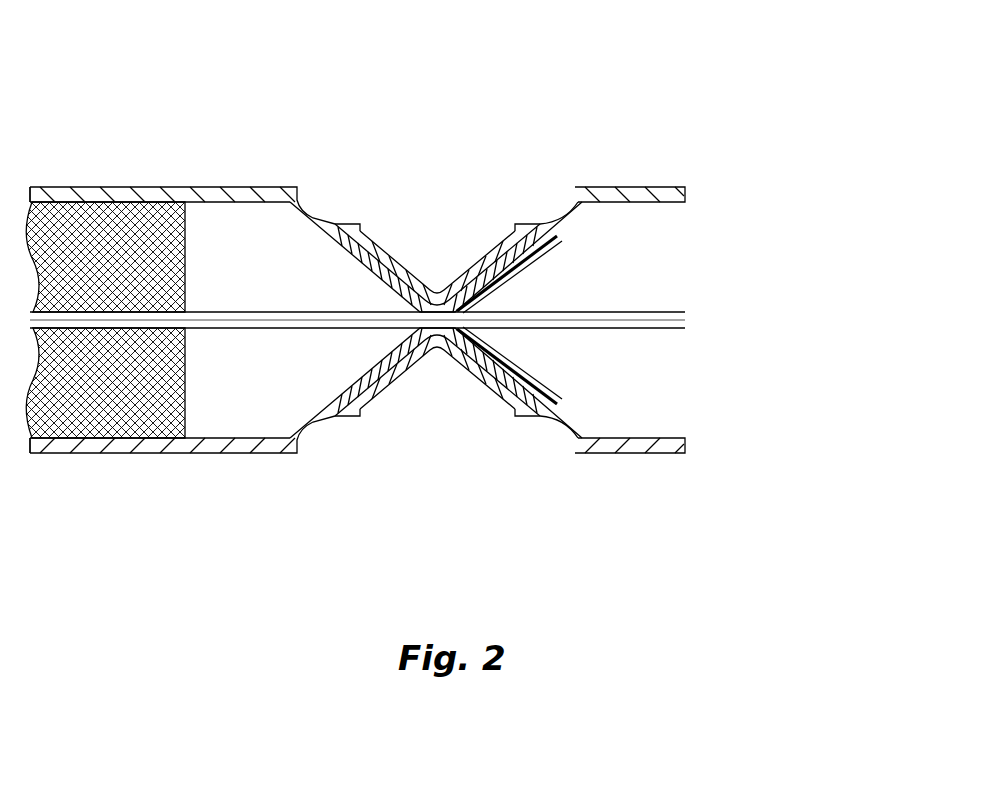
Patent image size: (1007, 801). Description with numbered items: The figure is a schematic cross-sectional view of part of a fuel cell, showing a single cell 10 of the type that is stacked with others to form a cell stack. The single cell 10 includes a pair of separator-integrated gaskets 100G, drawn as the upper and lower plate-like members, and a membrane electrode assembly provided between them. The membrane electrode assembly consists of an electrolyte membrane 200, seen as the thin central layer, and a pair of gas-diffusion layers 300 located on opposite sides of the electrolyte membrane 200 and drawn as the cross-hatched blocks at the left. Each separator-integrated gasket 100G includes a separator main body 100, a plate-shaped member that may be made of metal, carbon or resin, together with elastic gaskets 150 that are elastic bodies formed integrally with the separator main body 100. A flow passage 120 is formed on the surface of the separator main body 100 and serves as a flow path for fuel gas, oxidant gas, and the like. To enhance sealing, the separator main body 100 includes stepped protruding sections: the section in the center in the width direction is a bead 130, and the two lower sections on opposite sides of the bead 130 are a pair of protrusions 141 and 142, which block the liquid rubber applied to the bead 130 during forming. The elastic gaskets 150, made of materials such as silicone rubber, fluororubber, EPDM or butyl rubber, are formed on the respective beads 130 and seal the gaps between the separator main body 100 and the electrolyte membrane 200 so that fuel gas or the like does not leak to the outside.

The single cell 10 is at (673, 117).
The separator main body 100 is at (252, 184).
The separator-integrated gasket 100G is at (670, 228).
The flow passage 120 is at (62, 200).
The bead 130 is at (405, 278).
The protrusion 141 is at (330, 222).
The protrusion 142 is at (575, 196).
The elastic gasket 150 is at (513, 278).
The electrolyte membrane 200 is at (678, 322).
The gas-diffusion layer 300 is at (160, 200).